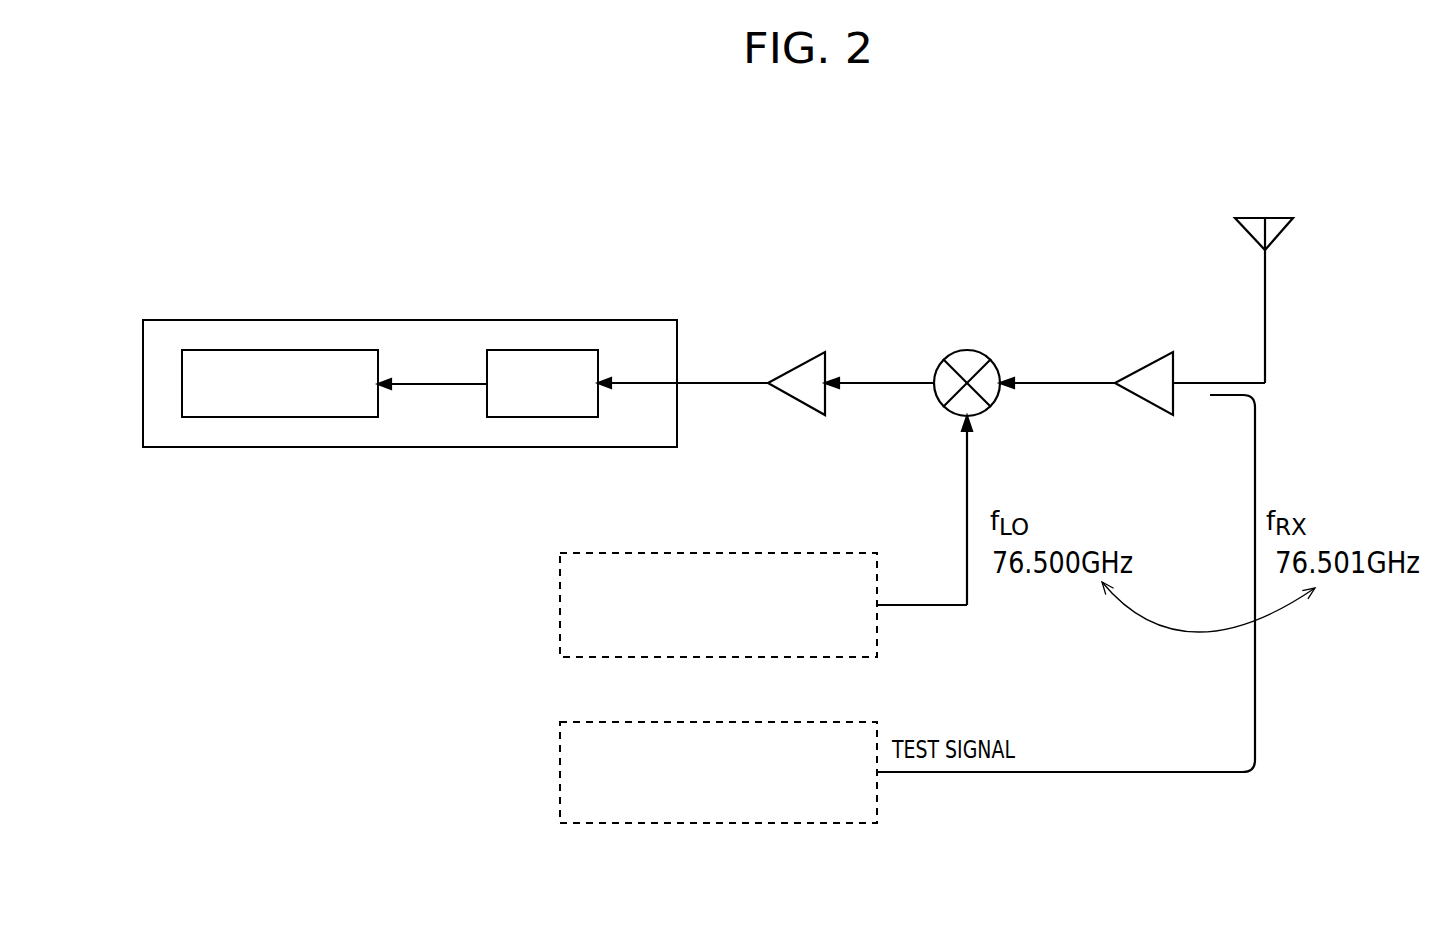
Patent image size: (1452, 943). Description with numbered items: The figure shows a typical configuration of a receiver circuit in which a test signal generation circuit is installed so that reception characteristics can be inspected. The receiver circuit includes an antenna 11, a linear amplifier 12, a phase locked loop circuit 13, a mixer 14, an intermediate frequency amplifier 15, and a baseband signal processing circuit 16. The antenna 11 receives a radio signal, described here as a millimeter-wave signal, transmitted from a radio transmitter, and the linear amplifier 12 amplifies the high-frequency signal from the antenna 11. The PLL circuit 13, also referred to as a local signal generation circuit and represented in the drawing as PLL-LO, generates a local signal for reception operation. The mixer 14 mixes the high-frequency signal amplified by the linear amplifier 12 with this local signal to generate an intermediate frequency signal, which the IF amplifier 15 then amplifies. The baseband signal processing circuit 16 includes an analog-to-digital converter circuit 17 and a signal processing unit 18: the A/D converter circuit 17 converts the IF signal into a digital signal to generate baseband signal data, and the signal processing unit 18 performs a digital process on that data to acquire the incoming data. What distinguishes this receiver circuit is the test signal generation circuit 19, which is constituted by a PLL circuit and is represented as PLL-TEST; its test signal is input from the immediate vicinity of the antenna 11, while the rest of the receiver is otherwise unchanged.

The antenna 11 is at (1277, 218).
The linear amplifier 12 is at (1140, 398).
The phase locked loop circuit 13 is at (560, 612).
The mixer 14 is at (998, 403).
The intermediate frequency amplifier 15 is at (793, 397).
The baseband signal processing circuit 16 is at (417, 447).
The analog-to-digital converter circuit 17 is at (545, 350).
The signal processing unit 18 is at (272, 350).
The test signal generation circuit 19 is at (560, 777).